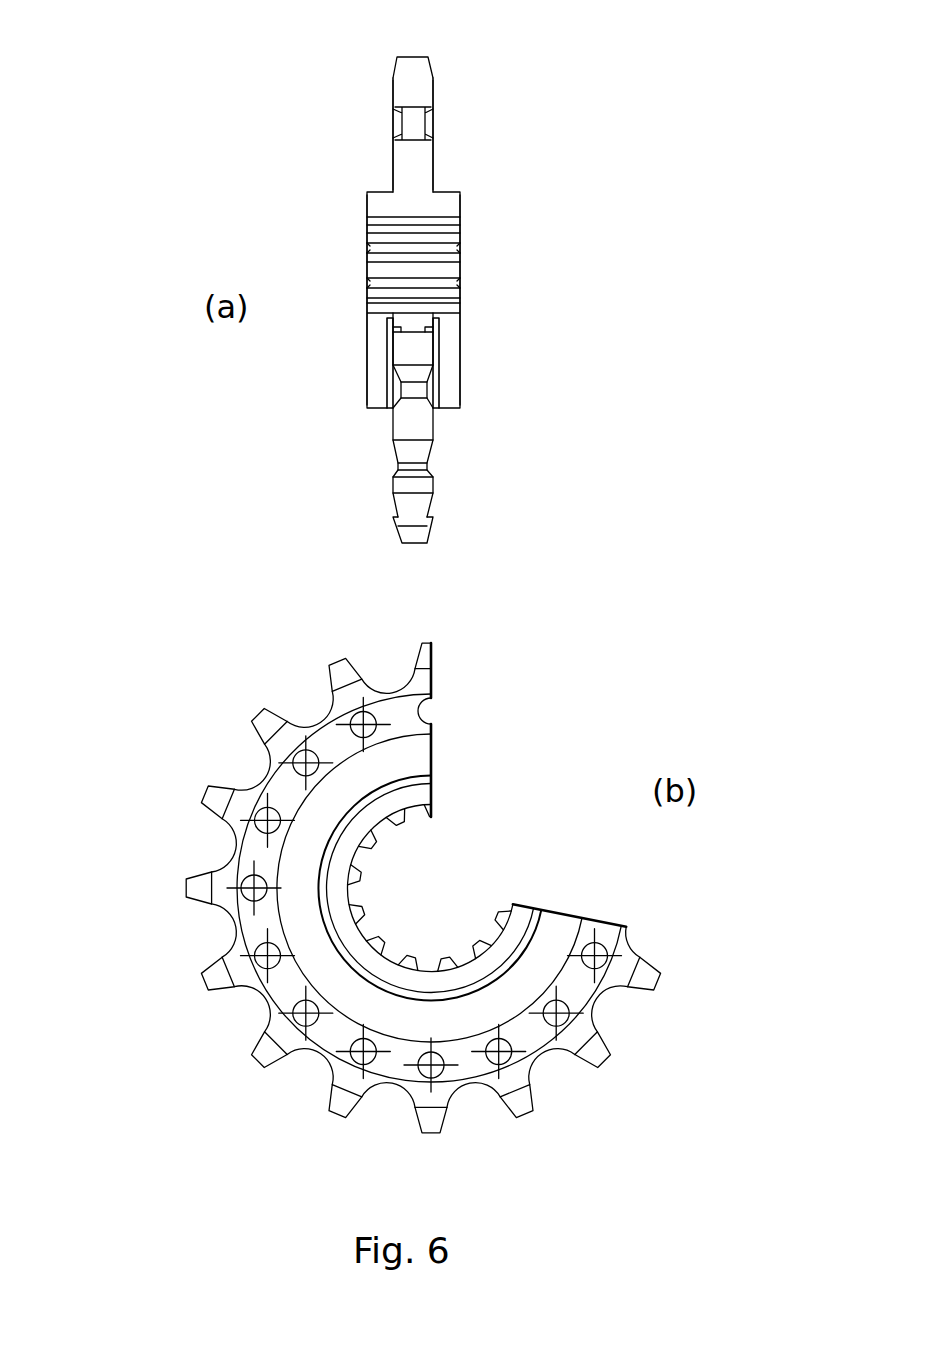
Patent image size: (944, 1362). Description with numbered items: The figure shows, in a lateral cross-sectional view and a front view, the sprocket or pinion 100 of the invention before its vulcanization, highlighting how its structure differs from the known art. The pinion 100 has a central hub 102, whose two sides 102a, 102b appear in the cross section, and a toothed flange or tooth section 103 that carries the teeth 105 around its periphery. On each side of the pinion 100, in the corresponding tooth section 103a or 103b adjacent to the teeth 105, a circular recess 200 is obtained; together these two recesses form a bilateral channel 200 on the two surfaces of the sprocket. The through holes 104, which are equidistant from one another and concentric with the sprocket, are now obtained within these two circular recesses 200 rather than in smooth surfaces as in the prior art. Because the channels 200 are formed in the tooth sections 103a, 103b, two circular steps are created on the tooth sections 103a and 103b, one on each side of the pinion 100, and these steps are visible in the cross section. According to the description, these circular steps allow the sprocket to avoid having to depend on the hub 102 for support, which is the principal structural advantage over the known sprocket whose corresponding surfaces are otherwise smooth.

The pinion 100 is at (527, 147).
The hub 102 is at (356, 401).
The hub side 102a is at (365, 207).
The hub side 102b is at (462, 207).
The tooth section 103 is at (431, 756).
The tooth section 103a is at (392, 152).
The tooth section 103b is at (431, 152).
The through holes 104 is at (262, 997).
The teeth 105 is at (409, 57).
The circular recesses 200 is at (394, 110).